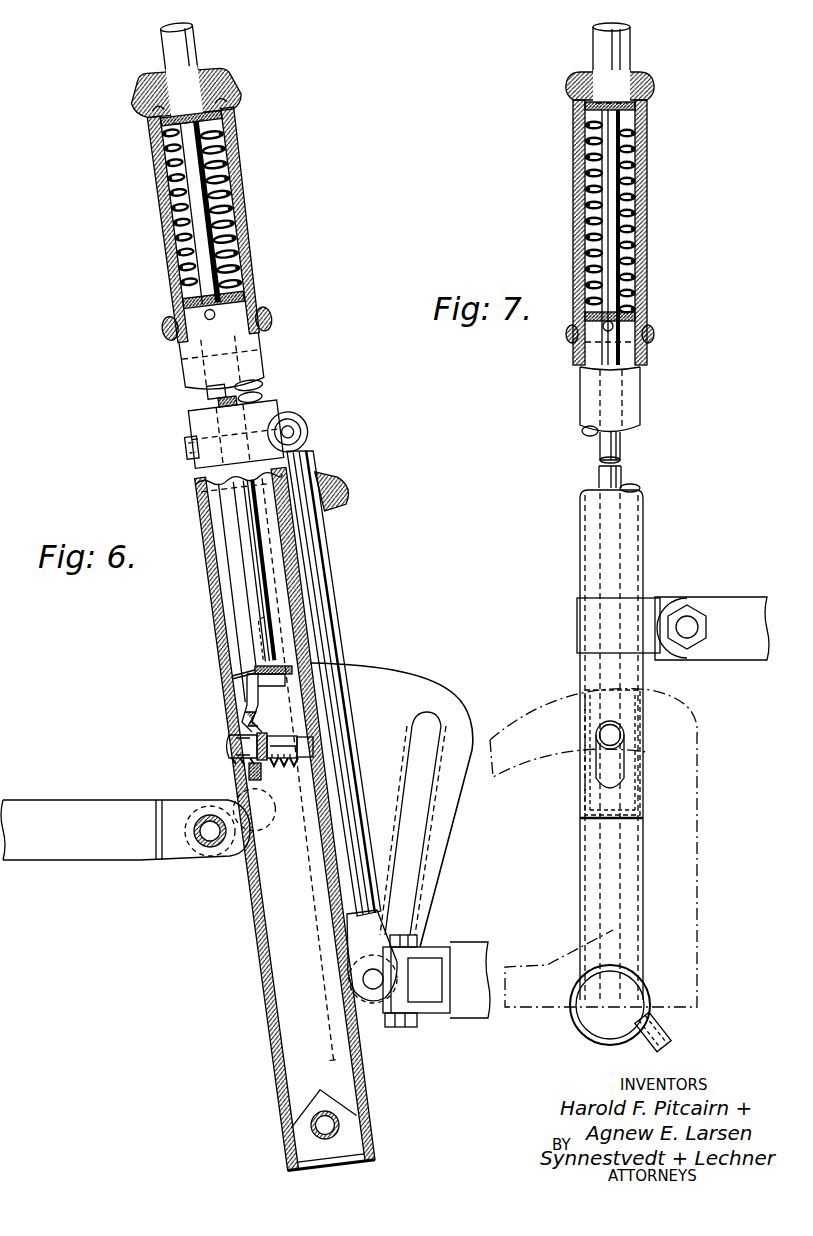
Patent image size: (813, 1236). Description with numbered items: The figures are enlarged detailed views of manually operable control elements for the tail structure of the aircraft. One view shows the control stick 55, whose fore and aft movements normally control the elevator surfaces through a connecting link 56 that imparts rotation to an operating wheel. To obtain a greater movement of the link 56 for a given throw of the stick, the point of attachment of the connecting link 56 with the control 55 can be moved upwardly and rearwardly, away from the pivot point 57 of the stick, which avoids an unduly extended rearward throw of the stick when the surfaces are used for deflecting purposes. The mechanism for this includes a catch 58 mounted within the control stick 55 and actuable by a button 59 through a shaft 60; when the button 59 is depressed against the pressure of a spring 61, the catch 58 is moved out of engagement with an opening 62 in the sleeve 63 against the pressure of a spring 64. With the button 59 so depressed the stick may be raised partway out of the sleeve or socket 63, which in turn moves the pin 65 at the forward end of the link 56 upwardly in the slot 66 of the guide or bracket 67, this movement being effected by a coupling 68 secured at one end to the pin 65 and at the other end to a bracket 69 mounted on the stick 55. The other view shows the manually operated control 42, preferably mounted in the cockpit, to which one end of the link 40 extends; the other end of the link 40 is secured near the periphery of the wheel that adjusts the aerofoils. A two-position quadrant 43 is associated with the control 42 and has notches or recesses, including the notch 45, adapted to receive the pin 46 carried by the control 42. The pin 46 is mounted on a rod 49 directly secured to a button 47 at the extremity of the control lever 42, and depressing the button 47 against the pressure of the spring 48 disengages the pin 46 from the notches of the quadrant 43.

In FIG. 7, the link 40 is at (727, 607).
In FIG. 7, the manually operated control 42 is at (667, 520).
In FIG. 7, the two-position quadrant 43 is at (527, 700).
In FIG. 7, the notch 45 is at (623, 742).
In FIG. 7, the pin 46 is at (603, 735).
In FIG. 7, the button 47 is at (612, 52).
In FIG. 7, the spring 48 is at (640, 223).
In FIG. 7, the rod 49 is at (623, 452).
In FIG. 6, the control stick 55 is at (193, 407).
In FIG. 6, the connecting link 56 is at (467, 1002).
In FIG. 6, the pivot point 57 is at (340, 1128).
In FIG. 6, the catch 58 is at (280, 760).
In FIG. 6, the button 59 is at (198, 45).
In FIG. 6, the shaft 60 is at (243, 190).
In FIG. 6, the spring 61 is at (250, 245).
In FIG. 6, the opening 62 is at (230, 767).
In FIG. 6, the sleeve 63 is at (230, 667).
In FIG. 6, the spring 64 is at (282, 733).
In FIG. 6, the pin 65 is at (370, 986).
In FIG. 6, the slot 66 is at (413, 838).
In FIG. 6, the bracket 67 is at (392, 680).
In FIG. 6, the coupling 68 is at (317, 585).
In FIG. 6, the bracket 69 is at (258, 423).